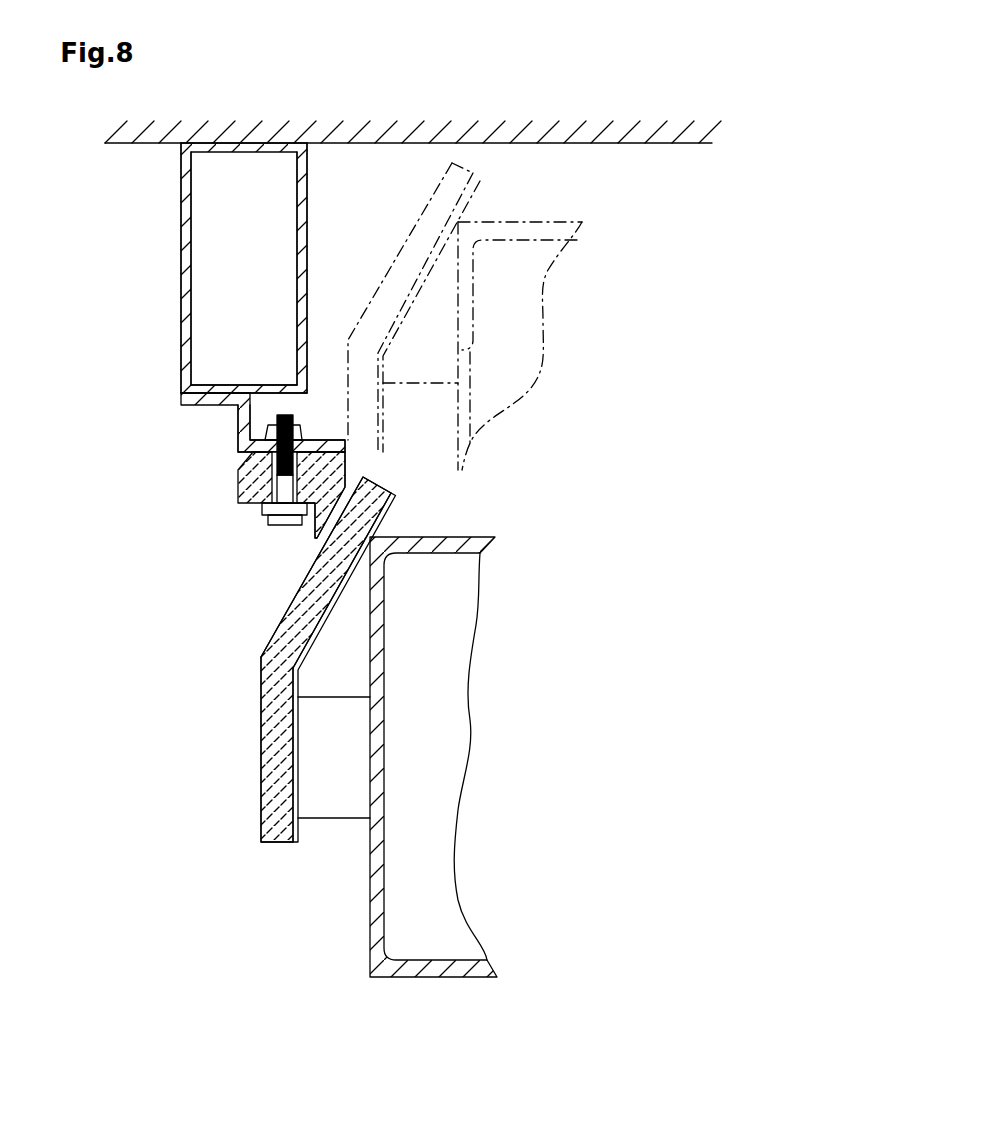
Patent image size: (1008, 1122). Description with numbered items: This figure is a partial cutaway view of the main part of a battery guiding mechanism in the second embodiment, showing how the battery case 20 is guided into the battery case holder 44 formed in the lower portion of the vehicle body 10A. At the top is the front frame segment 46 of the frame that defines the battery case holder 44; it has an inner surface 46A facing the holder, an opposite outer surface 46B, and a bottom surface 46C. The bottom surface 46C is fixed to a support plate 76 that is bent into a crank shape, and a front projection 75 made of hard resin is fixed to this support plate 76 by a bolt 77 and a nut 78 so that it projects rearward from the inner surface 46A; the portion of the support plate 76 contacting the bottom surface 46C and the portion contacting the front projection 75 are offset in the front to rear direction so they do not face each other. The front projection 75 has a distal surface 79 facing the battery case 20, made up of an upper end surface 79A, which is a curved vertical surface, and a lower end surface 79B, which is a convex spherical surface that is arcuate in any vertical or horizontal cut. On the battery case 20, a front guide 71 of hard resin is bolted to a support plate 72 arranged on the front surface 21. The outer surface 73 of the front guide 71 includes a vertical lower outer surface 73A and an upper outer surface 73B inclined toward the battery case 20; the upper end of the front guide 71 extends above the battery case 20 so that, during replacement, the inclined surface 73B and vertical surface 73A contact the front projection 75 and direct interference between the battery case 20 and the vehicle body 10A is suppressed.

The vehicle body 10A is at (650, 143).
The battery case 20 is at (414, 594).
The front surface 21 is at (372, 905).
The battery case holder 44 is at (590, 291).
The front frame segment 46 is at (221, 272).
The inner surface 46A is at (307, 185).
The outer surface 46B is at (181, 228).
The bottom surface 46C is at (257, 400).
The front guide 71 is at (283, 502).
The support plate 72 is at (330, 820).
The outer surface 73 is at (238, 659).
The lower outer surface 73A is at (262, 705).
The upper outer surface 73B is at (287, 612).
The front projection 75 is at (334, 628).
The support plate 76 is at (207, 407).
The bolt 77 is at (265, 522).
The nut 78 is at (233, 432).
The distal surface 79 is at (436, 647).
The upper end surface 79A is at (348, 462).
The lower end surface 79B is at (358, 518).